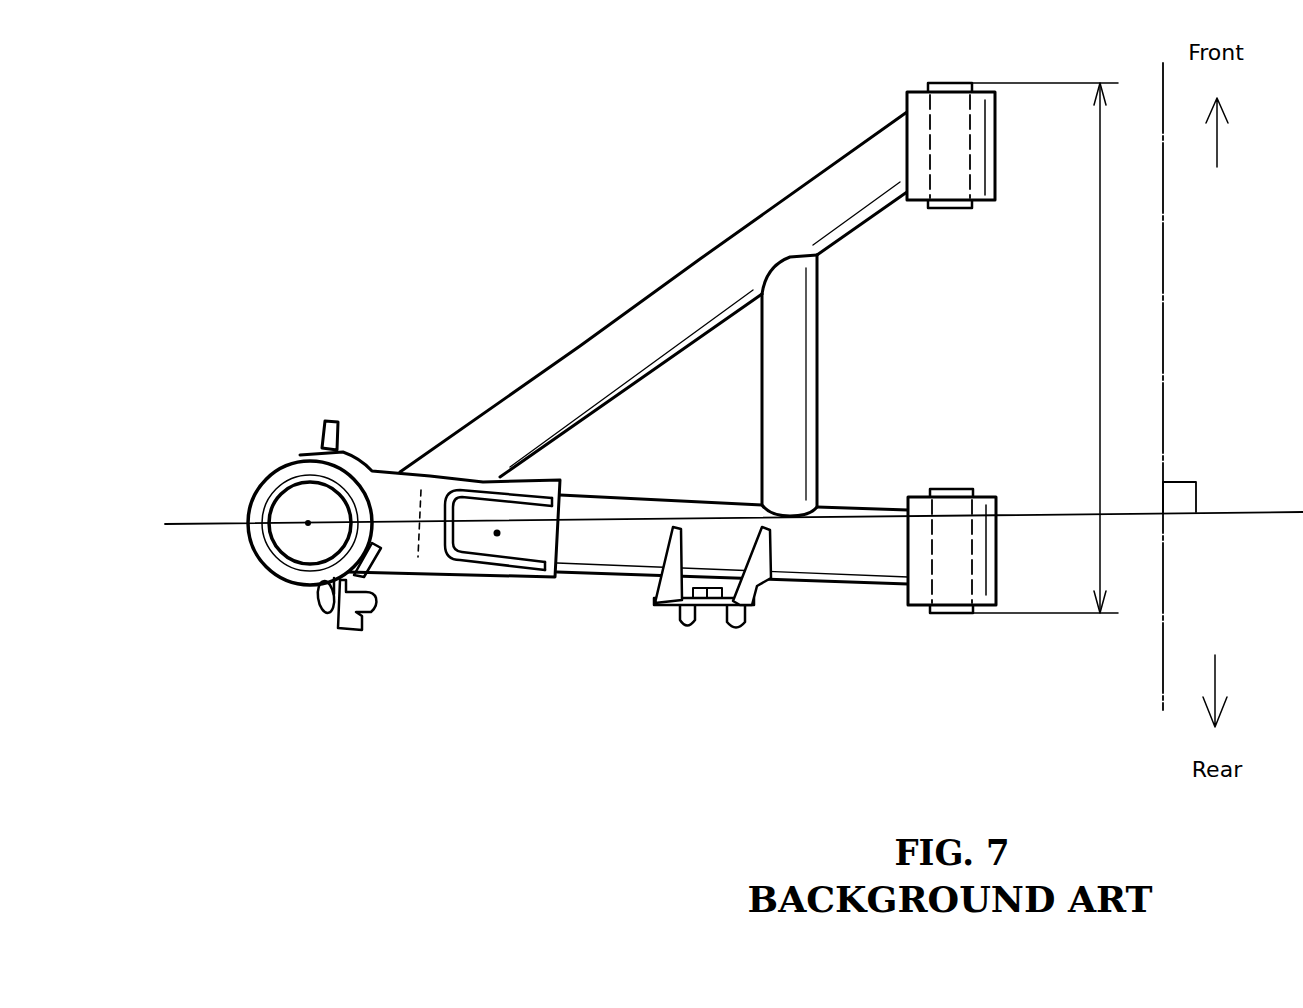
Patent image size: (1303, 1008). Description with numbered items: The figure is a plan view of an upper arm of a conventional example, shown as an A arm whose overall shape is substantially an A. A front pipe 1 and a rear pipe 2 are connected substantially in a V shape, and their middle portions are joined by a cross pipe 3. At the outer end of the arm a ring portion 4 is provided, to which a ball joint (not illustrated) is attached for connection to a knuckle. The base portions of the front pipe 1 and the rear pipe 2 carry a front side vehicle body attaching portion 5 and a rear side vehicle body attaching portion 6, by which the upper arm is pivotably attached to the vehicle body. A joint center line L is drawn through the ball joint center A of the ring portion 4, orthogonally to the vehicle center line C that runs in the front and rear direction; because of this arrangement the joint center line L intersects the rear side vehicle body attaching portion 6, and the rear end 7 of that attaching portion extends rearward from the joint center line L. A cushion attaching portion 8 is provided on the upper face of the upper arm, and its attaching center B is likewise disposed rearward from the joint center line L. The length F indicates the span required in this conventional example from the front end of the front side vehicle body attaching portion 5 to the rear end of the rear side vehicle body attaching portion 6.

The front pipe 1 is at (658, 296).
The rear pipe 2 is at (603, 547).
The cross pipe 3 is at (798, 362).
The ring portion 4 is at (270, 577).
The front side vehicle body attaching portion 5 is at (965, 157).
The rear side vehicle body attaching portion 6 is at (952, 555).
The rear end of rear side vehicle body attaching portion 7 is at (932, 613).
The cushion attaching portion 8 is at (485, 495).
The ball joint center A is at (308, 522).
The attaching center B is at (497, 533).
The vehicle center line C is at (1163, 402).
The length F is at (1024, 348).
The joint center line L is at (202, 525).